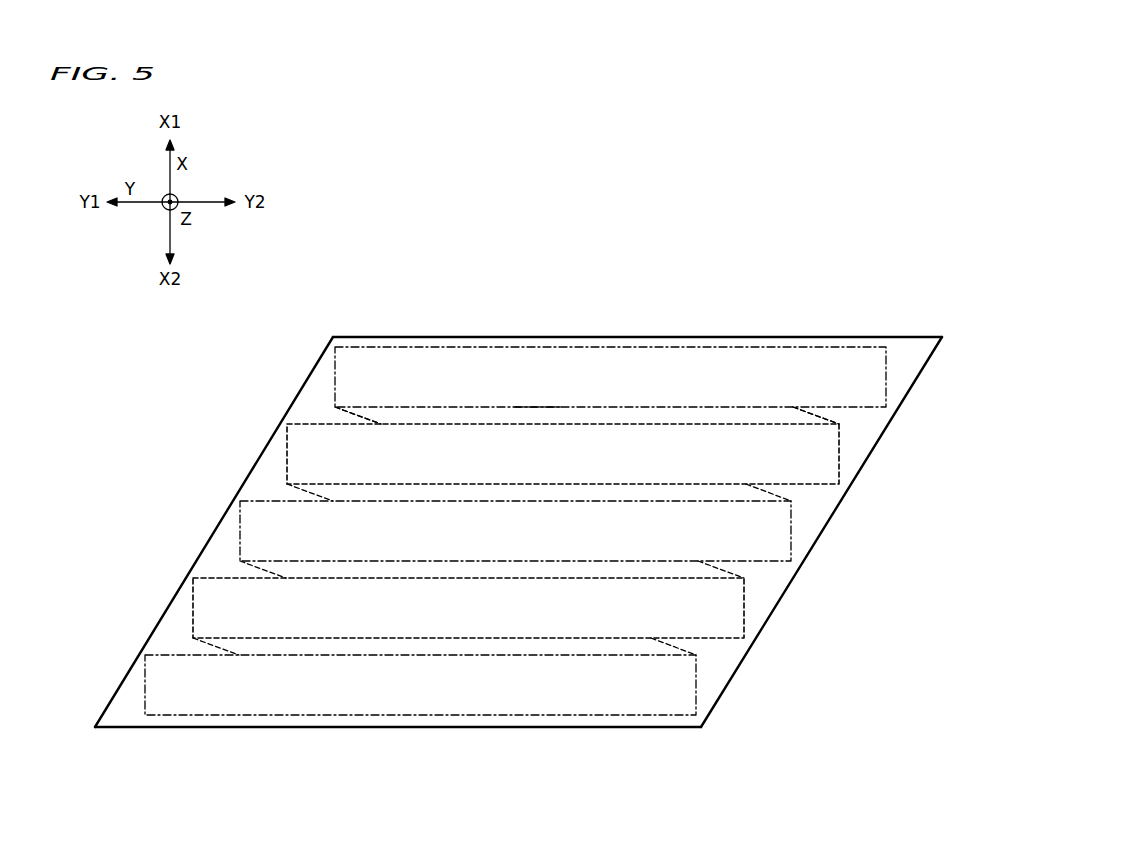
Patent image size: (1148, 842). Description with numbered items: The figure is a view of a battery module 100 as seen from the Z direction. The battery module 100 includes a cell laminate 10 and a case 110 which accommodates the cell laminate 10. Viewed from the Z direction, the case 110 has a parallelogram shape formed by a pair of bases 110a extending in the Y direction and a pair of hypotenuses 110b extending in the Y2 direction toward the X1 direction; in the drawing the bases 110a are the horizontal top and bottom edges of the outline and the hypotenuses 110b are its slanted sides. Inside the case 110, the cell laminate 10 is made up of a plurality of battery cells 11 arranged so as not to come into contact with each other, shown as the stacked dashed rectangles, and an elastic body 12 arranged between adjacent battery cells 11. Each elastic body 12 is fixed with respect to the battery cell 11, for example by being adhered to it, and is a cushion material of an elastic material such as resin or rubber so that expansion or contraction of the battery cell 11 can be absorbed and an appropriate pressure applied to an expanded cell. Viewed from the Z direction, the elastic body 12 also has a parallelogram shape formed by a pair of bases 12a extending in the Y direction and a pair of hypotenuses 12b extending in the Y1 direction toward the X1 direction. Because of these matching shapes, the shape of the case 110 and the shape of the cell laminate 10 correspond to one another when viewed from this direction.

The battery module 100 is at (671, 220).
The cell laminate 10 is at (896, 349).
The case 110 is at (441, 336).
The bases 110a is at (392, 336).
The hypotenuses 110b is at (222, 511).
The battery cell 11 is at (347, 373).
The elastic body 12 is at (725, 415).
The bases 12a is at (562, 425).
The hypotenuses 12b is at (355, 414).